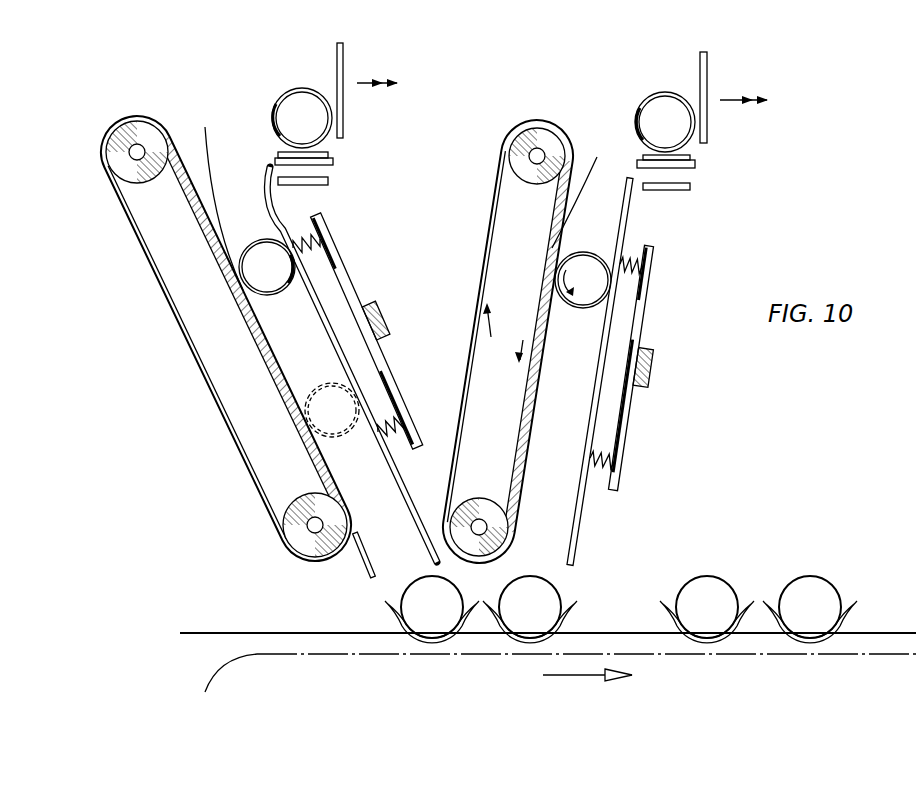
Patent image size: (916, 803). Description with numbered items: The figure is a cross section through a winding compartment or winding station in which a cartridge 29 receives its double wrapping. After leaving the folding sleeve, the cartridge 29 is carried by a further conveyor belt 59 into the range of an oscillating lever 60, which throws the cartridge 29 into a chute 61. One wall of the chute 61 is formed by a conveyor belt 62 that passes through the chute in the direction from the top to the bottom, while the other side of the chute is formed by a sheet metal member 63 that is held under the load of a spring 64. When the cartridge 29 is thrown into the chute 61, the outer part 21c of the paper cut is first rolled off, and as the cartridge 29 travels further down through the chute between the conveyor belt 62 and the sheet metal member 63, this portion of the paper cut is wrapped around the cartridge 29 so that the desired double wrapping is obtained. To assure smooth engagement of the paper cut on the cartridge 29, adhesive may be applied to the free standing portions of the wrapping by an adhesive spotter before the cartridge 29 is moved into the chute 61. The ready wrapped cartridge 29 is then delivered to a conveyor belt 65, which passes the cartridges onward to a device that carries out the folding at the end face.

The outer part of the paper cut 21c is at (597, 157).
The cartridge 29 is at (295, 123).
The further conveyor belt 59 is at (687, 188).
The oscillating lever 60 is at (708, 122).
The chute 61 is at (585, 242).
The conveyor belt 62 is at (275, 360).
The sheet metal member 63 is at (352, 358).
The spring 64 is at (615, 453).
The conveyor belt 65 is at (612, 645).